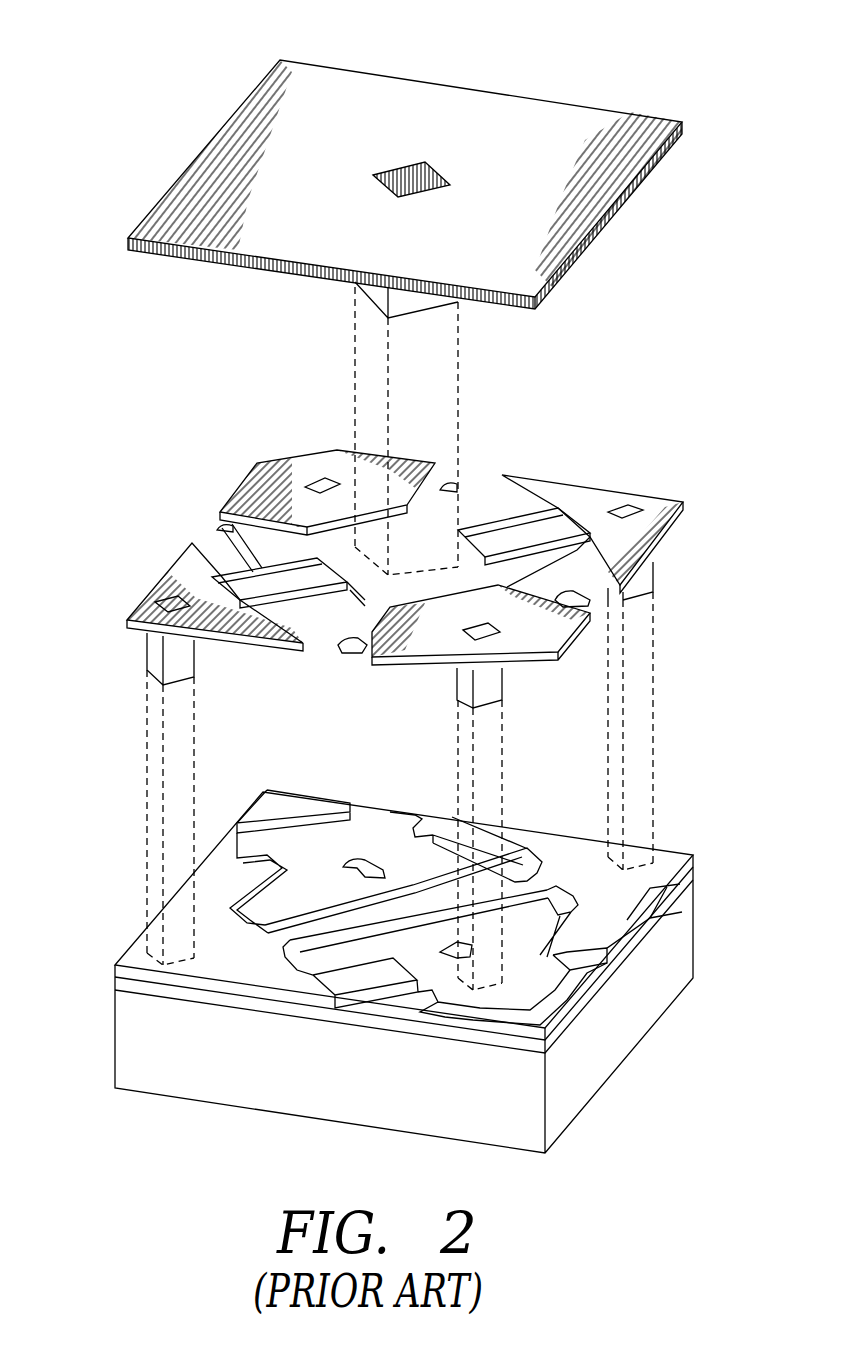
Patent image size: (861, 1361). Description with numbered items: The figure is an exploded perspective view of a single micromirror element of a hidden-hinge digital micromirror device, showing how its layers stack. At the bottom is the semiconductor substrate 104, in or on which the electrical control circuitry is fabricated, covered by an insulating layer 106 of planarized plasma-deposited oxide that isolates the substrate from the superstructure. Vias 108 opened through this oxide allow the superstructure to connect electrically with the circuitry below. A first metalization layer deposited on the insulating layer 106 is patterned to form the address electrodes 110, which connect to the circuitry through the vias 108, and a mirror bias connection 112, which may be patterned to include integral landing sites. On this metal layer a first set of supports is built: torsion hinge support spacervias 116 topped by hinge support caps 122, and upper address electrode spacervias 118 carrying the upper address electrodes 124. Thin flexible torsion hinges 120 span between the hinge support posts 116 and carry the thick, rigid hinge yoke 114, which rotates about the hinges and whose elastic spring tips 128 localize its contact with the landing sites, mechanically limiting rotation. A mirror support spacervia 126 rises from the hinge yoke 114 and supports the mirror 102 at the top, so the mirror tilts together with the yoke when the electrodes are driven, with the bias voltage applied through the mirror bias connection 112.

The mirror 102 is at (371, 93).
The substrate 104 is at (615, 1028).
The insulating layer 106 is at (115, 983).
The vias 108 is at (357, 860).
The address electrodes 110 is at (268, 789).
The mirror bias connection 112 is at (137, 953).
The hinge yoke 114 is at (478, 498).
The torsion hinge support spacervias 116 is at (647, 570).
The upper address electrode spacervias 118 is at (497, 687).
The torsion hinges 120 is at (527, 530).
The hinge support caps 122 is at (582, 500).
The upper address electrodes 124 is at (317, 467).
The mirror support spacervia 126 is at (420, 300).
The spring tips 128 is at (588, 597).